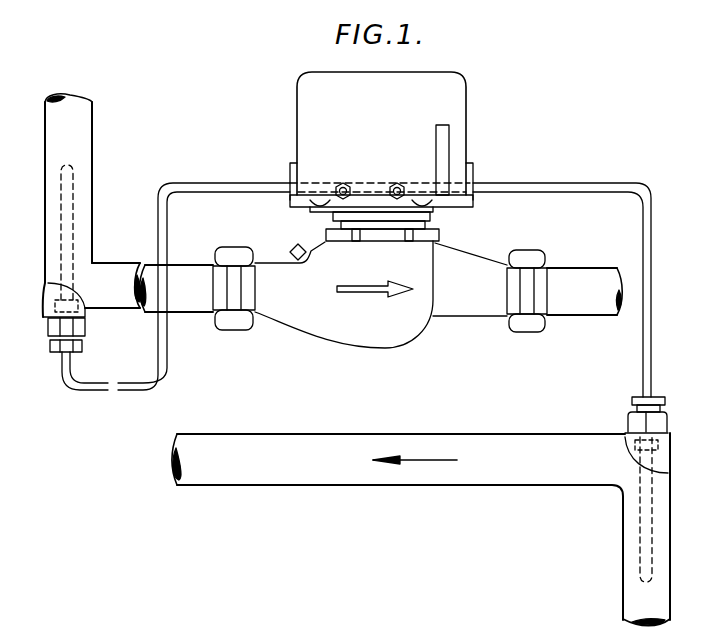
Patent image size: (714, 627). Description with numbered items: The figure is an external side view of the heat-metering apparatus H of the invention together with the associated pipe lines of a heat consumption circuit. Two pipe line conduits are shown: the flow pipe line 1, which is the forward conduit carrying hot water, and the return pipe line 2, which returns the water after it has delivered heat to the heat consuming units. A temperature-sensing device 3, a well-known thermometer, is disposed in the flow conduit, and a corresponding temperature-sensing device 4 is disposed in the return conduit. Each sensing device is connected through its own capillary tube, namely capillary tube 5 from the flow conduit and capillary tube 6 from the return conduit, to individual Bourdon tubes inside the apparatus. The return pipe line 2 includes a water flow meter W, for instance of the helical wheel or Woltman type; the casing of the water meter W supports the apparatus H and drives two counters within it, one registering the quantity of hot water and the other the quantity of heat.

The flow pipe line 1 is at (626, 478).
The return pipe line 2 is at (90, 272).
The temperature-sensing device 3 is at (641, 546).
The temperature-sensing device 4 is at (68, 183).
The capillary tube 5 is at (641, 365).
The capillary tube 6 is at (193, 184).
The apparatus H is at (448, 105).
The water flow meter W is at (378, 338).